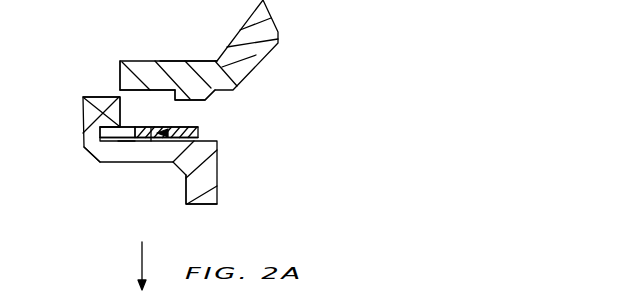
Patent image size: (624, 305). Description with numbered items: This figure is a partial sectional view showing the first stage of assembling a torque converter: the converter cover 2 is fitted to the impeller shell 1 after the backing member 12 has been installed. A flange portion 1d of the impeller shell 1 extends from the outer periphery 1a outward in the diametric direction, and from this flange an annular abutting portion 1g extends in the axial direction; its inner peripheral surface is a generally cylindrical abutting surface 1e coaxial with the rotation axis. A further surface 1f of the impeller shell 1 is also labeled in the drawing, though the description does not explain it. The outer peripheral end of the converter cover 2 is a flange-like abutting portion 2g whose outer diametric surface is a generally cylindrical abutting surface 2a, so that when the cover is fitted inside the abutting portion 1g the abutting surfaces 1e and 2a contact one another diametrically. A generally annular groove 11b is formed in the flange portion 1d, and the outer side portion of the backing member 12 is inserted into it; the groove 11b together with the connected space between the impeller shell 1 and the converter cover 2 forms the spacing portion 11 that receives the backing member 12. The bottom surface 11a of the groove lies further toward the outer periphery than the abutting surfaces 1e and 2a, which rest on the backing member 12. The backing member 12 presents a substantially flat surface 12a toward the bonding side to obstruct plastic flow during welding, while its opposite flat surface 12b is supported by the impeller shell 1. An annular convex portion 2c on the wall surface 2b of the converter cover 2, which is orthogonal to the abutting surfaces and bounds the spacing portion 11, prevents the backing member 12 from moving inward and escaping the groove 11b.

The impeller shell 1 is at (218, 167).
The outer periphery 1a is at (212, 186).
The flange portion 1d is at (85, 146).
The abutting surface 1e is at (125, 135).
The vertical wall face of lower body 1f is at (151, 128).
The abutting portion 1g is at (83, 108).
The converter cover 2 is at (236, 75).
The abutting surface 2a is at (109, 96).
The wall surface 2b is at (151, 128).
The convex portion 2c is at (188, 61).
The abutting portion 2g is at (124, 128).
The spacing portion 11 is at (112, 135).
The bottom surface 11a is at (121, 138).
The groove 11b is at (107, 135).
The backing member 12 is at (186, 127).
The flat surface 12a is at (183, 124).
The flat surface 12b is at (190, 143).